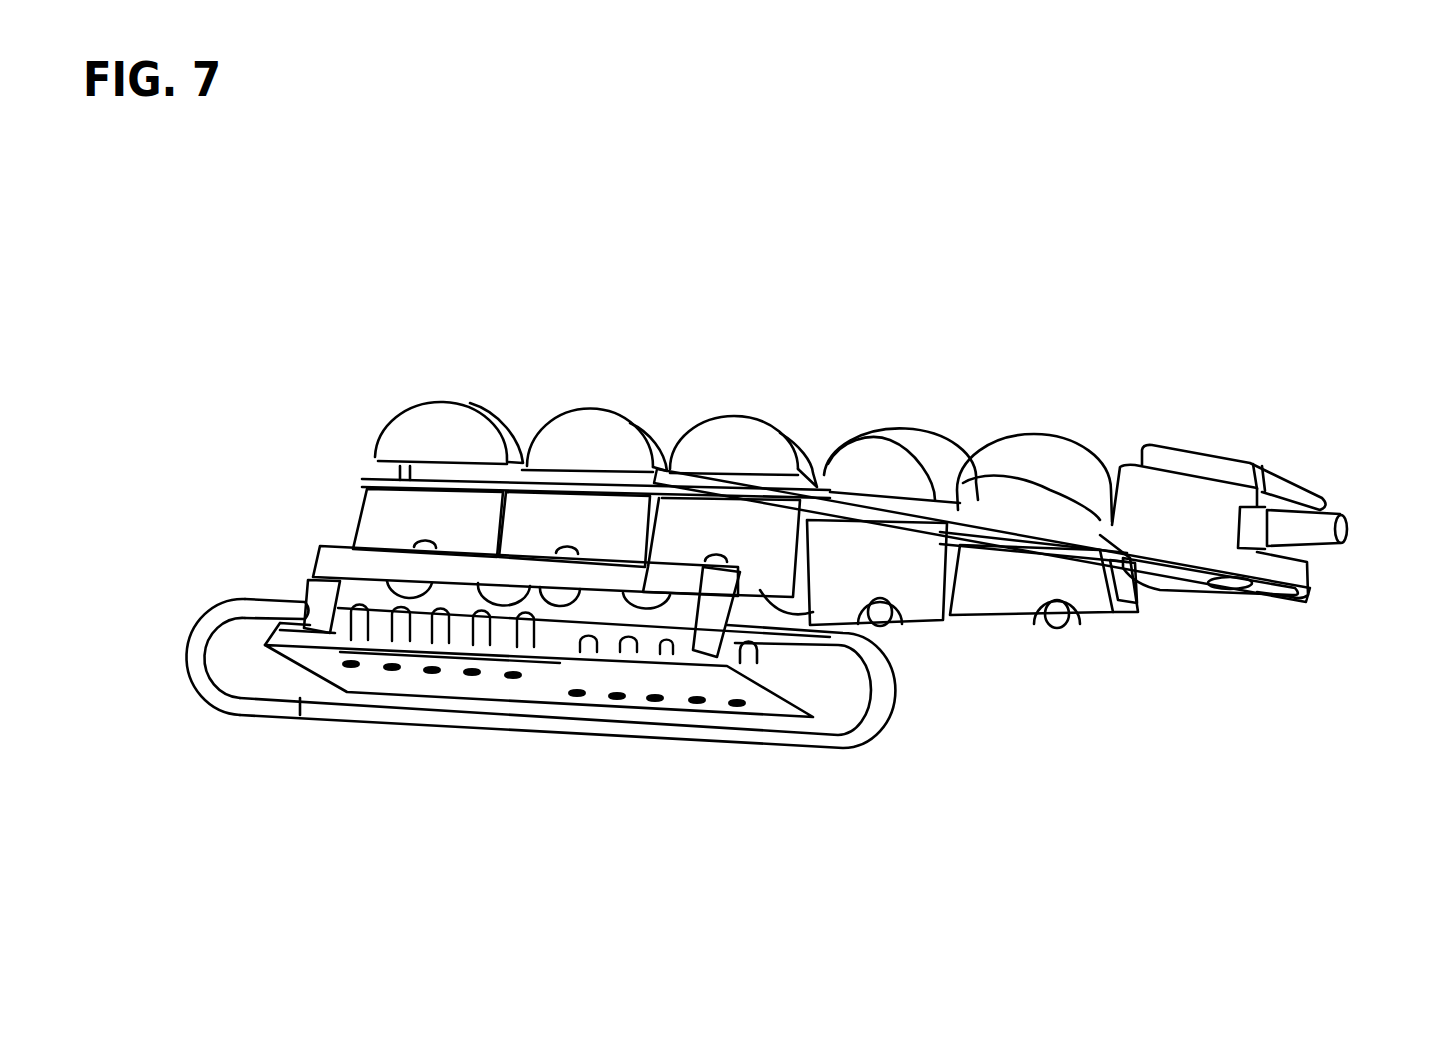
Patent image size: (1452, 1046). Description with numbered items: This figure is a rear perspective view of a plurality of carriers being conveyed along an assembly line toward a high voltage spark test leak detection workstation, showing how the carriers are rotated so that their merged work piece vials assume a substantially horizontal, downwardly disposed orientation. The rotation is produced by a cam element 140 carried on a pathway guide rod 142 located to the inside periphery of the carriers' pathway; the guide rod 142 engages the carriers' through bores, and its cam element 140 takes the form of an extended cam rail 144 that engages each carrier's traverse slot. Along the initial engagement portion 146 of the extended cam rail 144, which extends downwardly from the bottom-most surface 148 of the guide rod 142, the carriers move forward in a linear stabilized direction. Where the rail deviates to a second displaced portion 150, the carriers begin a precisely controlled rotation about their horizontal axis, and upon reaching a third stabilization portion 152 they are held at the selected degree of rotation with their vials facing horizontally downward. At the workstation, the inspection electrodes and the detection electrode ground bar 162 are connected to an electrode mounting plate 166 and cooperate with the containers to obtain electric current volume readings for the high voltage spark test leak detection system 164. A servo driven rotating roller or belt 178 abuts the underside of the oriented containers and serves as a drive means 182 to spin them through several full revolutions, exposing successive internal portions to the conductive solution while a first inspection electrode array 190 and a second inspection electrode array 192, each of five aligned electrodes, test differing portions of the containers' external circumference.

The cam element 140 is at (1238, 548).
The pathway guide rod 142 is at (1322, 508).
The extended cam rail 144 is at (953, 533).
The initial engagement portion 146 is at (1262, 585).
The bottom-most surface 148 is at (1283, 562).
The second displaced portion 150 is at (930, 530).
The third stabilization portion 152 is at (662, 483).
The detection electrode ground bar 162 is at (330, 560).
The high voltage spark test leak detection system 164 is at (433, 672).
The electrode mounting plate 166 is at (330, 636).
The servo driven rotating roller or belt 178 is at (815, 638).
The drive means 182 is at (192, 598).
The first inspection electrode array 190 is at (766, 664).
The second inspection electrode array 192 is at (537, 640).